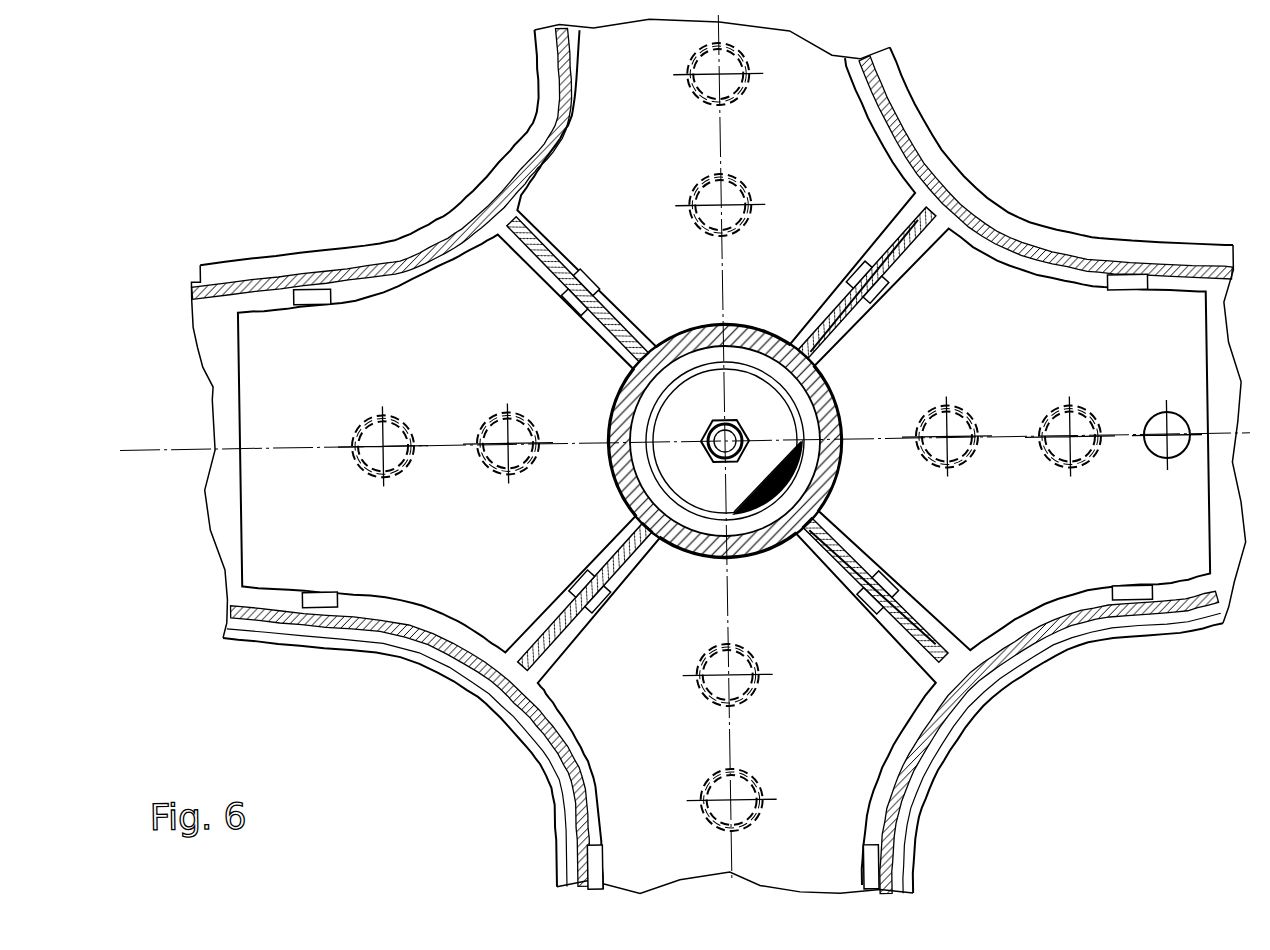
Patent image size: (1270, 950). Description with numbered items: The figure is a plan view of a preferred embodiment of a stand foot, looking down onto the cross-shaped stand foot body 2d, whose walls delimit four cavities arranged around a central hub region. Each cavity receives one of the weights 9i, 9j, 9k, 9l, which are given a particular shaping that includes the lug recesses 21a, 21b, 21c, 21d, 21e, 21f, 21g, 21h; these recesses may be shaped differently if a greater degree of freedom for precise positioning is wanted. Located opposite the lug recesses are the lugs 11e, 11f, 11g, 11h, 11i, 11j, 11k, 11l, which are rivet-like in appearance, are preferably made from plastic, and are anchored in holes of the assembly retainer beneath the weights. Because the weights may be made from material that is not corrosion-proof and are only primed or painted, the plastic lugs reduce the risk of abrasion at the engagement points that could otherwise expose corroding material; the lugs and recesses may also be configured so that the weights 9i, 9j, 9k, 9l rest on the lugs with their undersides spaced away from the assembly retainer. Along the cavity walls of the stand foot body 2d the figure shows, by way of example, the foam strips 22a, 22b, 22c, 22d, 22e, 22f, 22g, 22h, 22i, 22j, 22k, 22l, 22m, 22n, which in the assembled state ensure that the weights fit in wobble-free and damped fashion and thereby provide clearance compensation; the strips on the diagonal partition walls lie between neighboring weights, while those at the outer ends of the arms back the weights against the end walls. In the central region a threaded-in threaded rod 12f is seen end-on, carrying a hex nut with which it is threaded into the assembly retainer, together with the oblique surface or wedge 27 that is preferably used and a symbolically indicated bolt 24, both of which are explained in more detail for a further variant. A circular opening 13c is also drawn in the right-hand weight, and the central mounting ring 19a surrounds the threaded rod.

The stand foot body 2d is at (545, 745).
The weight 9i is at (327, 408).
The weight 9j is at (611, 213).
The weight 9k is at (1026, 377).
The weight 9l is at (679, 609).
The lug 11e is at (384, 412).
The lug 11f is at (512, 412).
The lug 11g is at (700, 97).
The lug 11h is at (748, 194).
The lug 11i is at (1080, 412).
The lug 11j is at (932, 414).
The lug 11k is at (703, 822).
The lug 11l is at (750, 655).
The threaded rod 12f is at (712, 458).
The hole 13c is at (1152, 456).
The hub 19a is at (747, 324).
The lug recess 21a is at (378, 470).
The lug recess 21b is at (494, 470).
The lug recess 21c is at (745, 99).
The lug recess 21d is at (690, 194).
The lug recess 21e is at (1060, 470).
The lug recess 21f is at (937, 470).
The lug recess 21g is at (752, 770).
The lug recess 21h is at (705, 692).
The foam strip 22a is at (572, 582).
The foam strip 22b is at (570, 298).
The foam strip 22c is at (592, 276).
The foam strip 22d is at (860, 271).
The foam strip 22e is at (884, 296).
The foam strip 22f is at (885, 588).
The foam strip 22g is at (862, 612).
The foam strip 22h is at (596, 606).
The foam strip 22i is at (318, 601).
The foam strip 22j is at (314, 284).
The foam strip 22k is at (1148, 282).
The foam strip 22l is at (1130, 606).
The foam strip 22m is at (872, 866).
The clip 22n is at (585, 862).
The bolt 24 is at (800, 498).
The oblique surface or wedge 27 is at (795, 470).